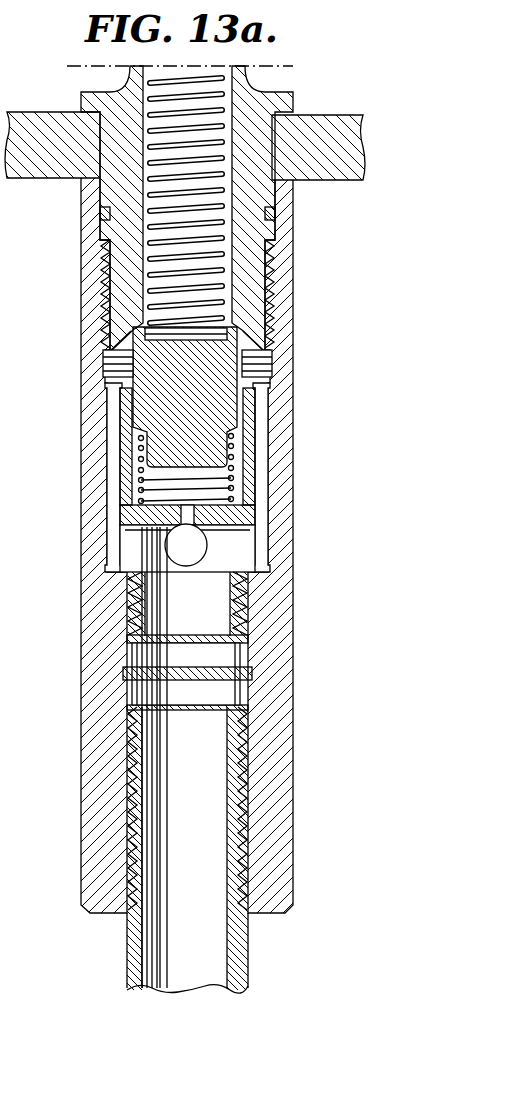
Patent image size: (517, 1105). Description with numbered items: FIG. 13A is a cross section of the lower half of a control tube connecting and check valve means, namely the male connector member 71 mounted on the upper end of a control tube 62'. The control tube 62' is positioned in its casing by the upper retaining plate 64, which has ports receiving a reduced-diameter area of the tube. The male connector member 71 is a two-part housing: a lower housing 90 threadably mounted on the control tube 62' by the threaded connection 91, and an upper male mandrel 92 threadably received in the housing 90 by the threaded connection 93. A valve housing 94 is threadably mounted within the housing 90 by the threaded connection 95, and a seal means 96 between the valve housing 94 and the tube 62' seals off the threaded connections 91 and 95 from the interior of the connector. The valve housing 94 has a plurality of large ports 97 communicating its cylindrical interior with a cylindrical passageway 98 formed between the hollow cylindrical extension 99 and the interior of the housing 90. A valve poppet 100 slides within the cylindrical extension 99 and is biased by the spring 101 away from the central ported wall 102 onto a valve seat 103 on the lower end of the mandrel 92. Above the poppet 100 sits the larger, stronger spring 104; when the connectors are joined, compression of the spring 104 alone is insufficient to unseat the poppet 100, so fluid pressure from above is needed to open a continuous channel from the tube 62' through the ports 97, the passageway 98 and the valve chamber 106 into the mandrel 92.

The control tube 62' is at (211, 760).
The upper retaining plate 64 is at (40, 178).
The male connector member 71 is at (81, 322).
The lower housing 90 is at (93, 677).
The threaded connection 91 is at (127, 800).
The male mandrel 92 is at (81, 97).
The threaded connection 93 is at (103, 272).
The valve housing 94 is at (212, 607).
The threaded connection 95 is at (127, 603).
The seal means 96 is at (227, 658).
The ports 97 is at (242, 558).
The cylindrical passageway 98 is at (255, 477).
The hollow cylindrical extension 99 is at (247, 425).
The valve poppet 100 is at (200, 388).
The spring 101 is at (145, 484).
The central ported wall 102 is at (207, 518).
The valve seat 103 is at (262, 338).
The spring 104 is at (215, 248).
The valve chamber 106 is at (108, 372).